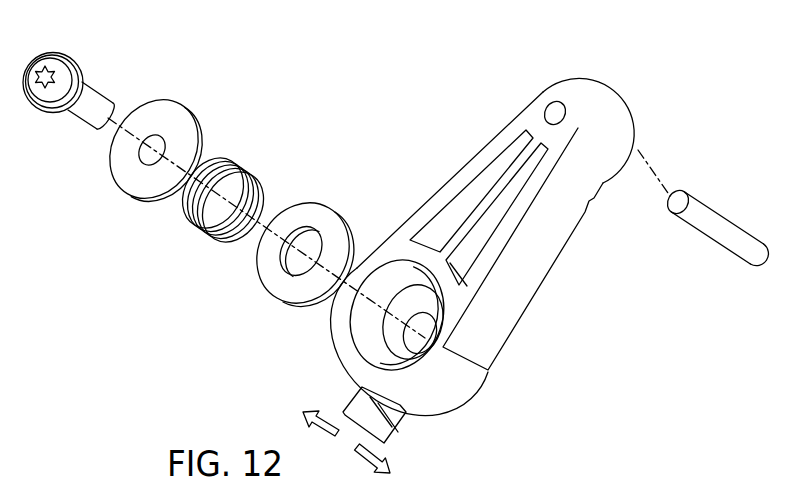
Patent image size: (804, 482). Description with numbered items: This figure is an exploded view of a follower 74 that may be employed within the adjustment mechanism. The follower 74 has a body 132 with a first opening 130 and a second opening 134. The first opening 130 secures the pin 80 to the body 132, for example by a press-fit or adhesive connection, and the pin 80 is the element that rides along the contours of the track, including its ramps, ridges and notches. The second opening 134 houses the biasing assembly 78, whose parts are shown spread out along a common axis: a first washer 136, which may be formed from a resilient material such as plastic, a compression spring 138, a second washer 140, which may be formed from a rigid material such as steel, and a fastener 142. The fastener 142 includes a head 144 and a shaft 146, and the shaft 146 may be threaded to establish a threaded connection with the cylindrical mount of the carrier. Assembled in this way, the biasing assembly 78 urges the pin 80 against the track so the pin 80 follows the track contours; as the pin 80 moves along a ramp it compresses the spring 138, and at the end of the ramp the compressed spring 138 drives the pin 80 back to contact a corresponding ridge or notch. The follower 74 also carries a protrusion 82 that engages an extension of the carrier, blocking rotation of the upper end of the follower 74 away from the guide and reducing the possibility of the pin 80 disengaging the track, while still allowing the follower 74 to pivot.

The follower 74 is at (429, 255).
The biasing assembly 78 is at (356, 305).
The pin 80 is at (724, 214).
The protrusion 82 is at (398, 429).
The first opening 130 is at (548, 105).
The body 132 is at (495, 210).
The second opening 134 is at (380, 276).
The first washer 136 is at (313, 208).
The compression spring 138 is at (245, 174).
The second washer 140 is at (190, 126).
The fastener 142 is at (97, 68).
The head 144 is at (78, 60).
The shaft 146 is at (94, 91).